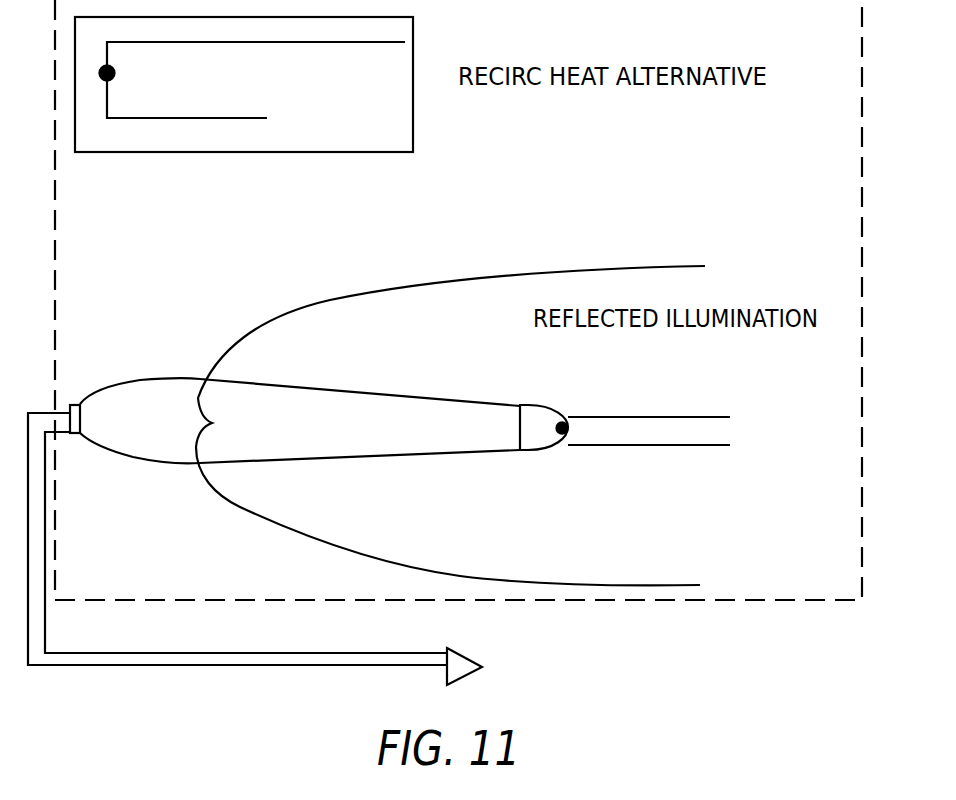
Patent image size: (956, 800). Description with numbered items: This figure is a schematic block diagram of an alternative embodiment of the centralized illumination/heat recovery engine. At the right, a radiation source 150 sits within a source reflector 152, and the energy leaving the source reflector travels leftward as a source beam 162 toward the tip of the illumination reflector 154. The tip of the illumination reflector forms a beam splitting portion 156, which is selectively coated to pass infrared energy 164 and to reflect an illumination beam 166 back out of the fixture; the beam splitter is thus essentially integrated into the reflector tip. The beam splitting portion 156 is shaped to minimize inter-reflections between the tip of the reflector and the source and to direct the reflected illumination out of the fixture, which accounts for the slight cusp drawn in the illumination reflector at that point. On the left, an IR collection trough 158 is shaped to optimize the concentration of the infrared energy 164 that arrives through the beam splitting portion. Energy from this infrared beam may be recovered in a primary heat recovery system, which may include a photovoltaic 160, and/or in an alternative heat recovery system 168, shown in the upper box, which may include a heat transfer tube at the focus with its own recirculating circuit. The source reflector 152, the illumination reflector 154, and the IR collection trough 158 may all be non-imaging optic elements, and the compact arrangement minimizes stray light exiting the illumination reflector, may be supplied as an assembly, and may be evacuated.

The radiation source 150 is at (567, 432).
The source reflector 152 is at (525, 405).
The illumination reflector 154 is at (418, 282).
The beam splitting portion of the illumination reflector 156 is at (204, 406).
The IR collection trough 158 is at (683, 160).
The photovoltaic 160 is at (73, 403).
The source beam 162 is at (315, 405).
The infrared energy 164 is at (170, 397).
The illumination beam 166 is at (378, 537).
The alternative heat recovery system 168 is at (418, 50).